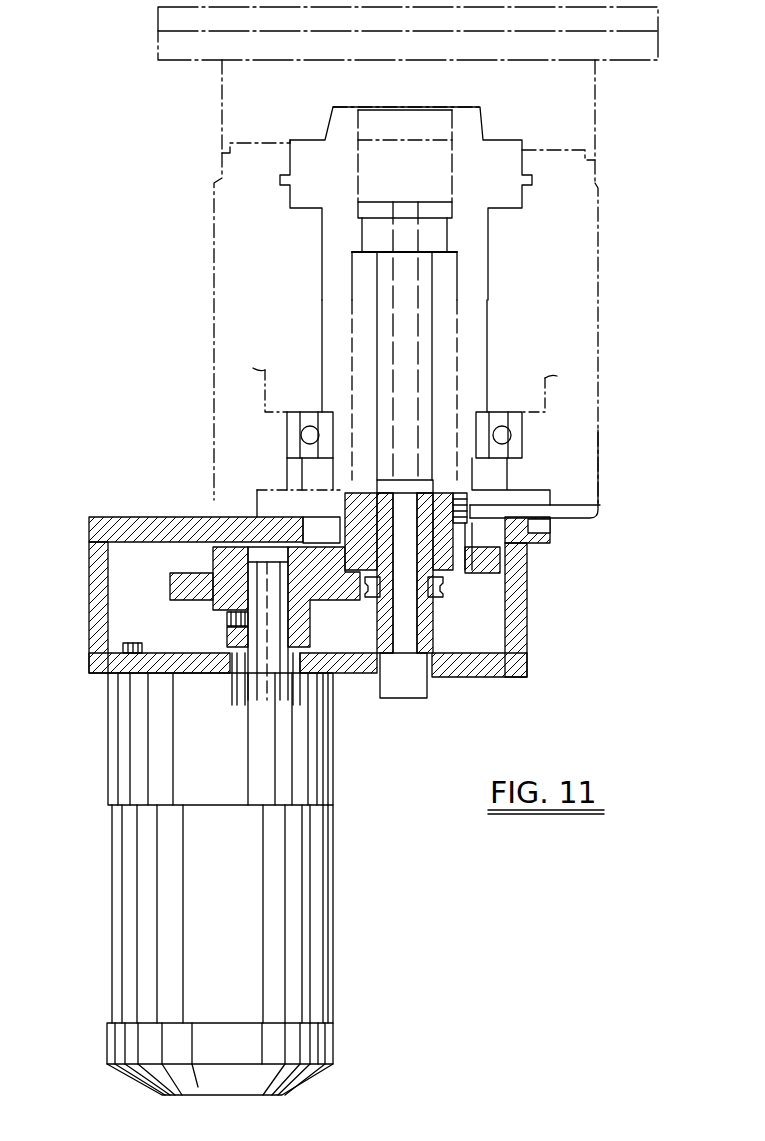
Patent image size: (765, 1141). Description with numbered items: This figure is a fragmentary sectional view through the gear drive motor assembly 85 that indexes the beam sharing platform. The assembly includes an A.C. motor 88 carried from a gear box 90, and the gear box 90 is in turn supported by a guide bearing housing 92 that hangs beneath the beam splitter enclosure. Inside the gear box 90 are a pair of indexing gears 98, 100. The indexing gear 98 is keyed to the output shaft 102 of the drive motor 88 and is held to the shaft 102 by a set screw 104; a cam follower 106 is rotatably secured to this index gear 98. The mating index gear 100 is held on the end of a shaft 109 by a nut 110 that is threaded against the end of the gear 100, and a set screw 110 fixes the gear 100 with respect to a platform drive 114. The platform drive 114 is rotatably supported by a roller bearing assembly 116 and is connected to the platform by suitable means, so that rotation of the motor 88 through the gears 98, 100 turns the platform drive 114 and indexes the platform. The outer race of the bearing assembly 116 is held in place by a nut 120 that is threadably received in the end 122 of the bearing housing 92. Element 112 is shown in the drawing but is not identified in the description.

The gear drive motor assembly 85 is at (117, 742).
The A.C. motor 88 is at (130, 848).
The gear box 90 is at (88, 578).
The guide bearing housing 92 is at (596, 358).
The indexing gear 98 is at (169, 583).
The indexing gear 100 is at (492, 562).
The output shaft 102 is at (290, 627).
The set screw 104 is at (226, 620).
The cam follower 106 is at (337, 537).
The shaft 109 is at (430, 613).
The nut 110 is at (444, 588).
The mounting plate 112 is at (600, 505).
The platform drive 114 is at (482, 292).
The roller bearing assembly 116 is at (512, 432).
The nut 120 is at (518, 490).
The end of the bearing housing 122 is at (600, 440).